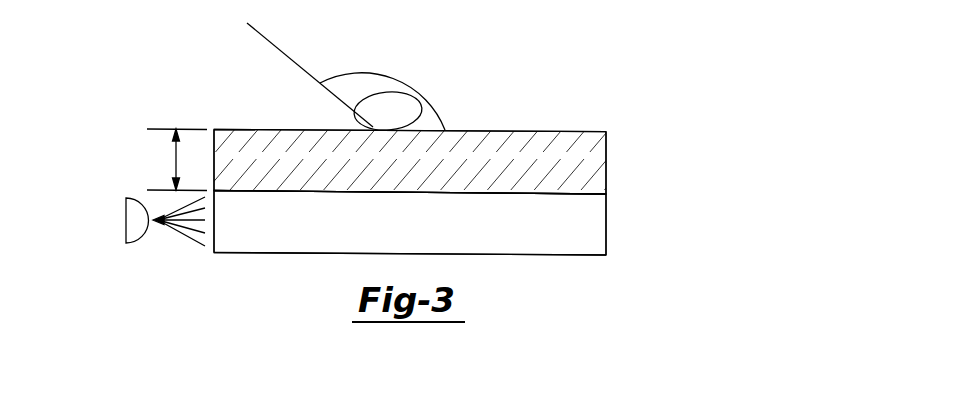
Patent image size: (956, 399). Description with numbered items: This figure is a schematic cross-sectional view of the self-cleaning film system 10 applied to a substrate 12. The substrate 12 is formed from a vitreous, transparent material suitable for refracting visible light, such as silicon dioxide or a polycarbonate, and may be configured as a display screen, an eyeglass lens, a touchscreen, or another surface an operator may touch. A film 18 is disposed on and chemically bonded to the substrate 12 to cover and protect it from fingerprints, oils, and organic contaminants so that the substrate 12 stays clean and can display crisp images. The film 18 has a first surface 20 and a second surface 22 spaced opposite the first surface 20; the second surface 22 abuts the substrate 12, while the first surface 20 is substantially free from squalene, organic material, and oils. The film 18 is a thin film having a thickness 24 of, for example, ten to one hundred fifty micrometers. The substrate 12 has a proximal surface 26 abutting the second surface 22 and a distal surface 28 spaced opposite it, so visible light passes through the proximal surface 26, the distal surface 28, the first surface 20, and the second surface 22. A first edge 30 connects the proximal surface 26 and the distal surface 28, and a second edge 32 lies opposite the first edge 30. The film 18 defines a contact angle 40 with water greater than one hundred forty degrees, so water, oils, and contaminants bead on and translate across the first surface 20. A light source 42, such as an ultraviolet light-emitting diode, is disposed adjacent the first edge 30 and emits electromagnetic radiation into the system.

The self-cleaning film system 10 is at (176, 51).
The substrate 12 is at (595, 216).
The film 18 is at (595, 169).
The first surface 20 is at (526, 131).
The second surface 22 is at (435, 192).
The thickness 24 is at (172, 158).
The proximal surface 26 is at (350, 193).
The distal surface 28 is at (522, 257).
The first edge 30 is at (213, 252).
The second edge 32 is at (606, 232).
The contact angle 40 is at (395, 80).
The light source 42 is at (124, 220).